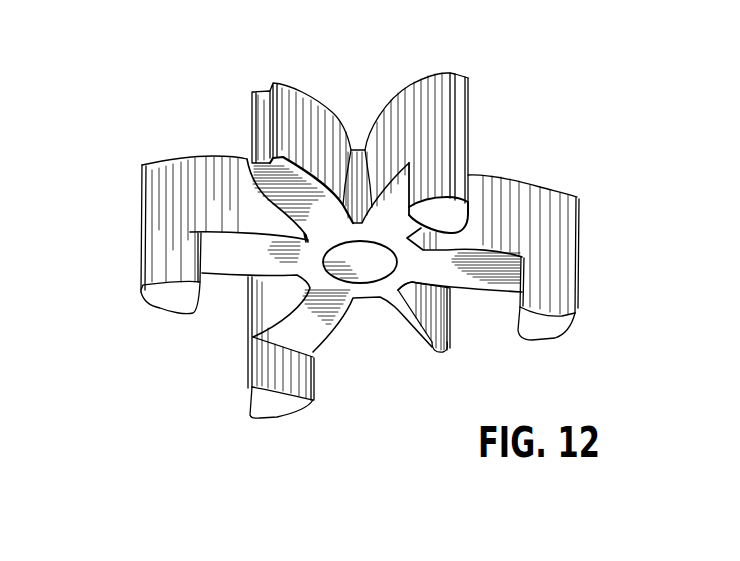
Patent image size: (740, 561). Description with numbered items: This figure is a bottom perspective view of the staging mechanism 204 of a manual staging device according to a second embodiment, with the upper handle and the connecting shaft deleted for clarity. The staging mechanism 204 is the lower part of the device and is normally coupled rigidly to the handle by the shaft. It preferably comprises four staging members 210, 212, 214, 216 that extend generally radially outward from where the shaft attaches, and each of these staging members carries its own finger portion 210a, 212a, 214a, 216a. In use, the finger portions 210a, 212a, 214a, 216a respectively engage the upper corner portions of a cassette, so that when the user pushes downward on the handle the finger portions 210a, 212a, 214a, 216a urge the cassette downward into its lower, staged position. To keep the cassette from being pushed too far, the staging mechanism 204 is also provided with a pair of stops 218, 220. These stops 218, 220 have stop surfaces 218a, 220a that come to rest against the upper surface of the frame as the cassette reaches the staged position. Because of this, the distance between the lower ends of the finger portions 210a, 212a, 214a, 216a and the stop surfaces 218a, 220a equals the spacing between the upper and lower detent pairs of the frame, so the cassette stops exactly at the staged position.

The staging mechanism 204 is at (469, 75).
The staging member 210 is at (567, 198).
The finger portion 210a is at (577, 305).
The staging member 212 is at (432, 87).
The finger portion 212a is at (463, 205).
The staging member 214 is at (142, 220).
The finger portion 214a is at (162, 307).
The staging member 216 is at (250, 375).
The finger portion 216a is at (277, 413).
The stop 218 is at (302, 90).
The stop surface 218a is at (260, 175).
The stop 220 is at (445, 320).
The stop surface 220a is at (433, 350).